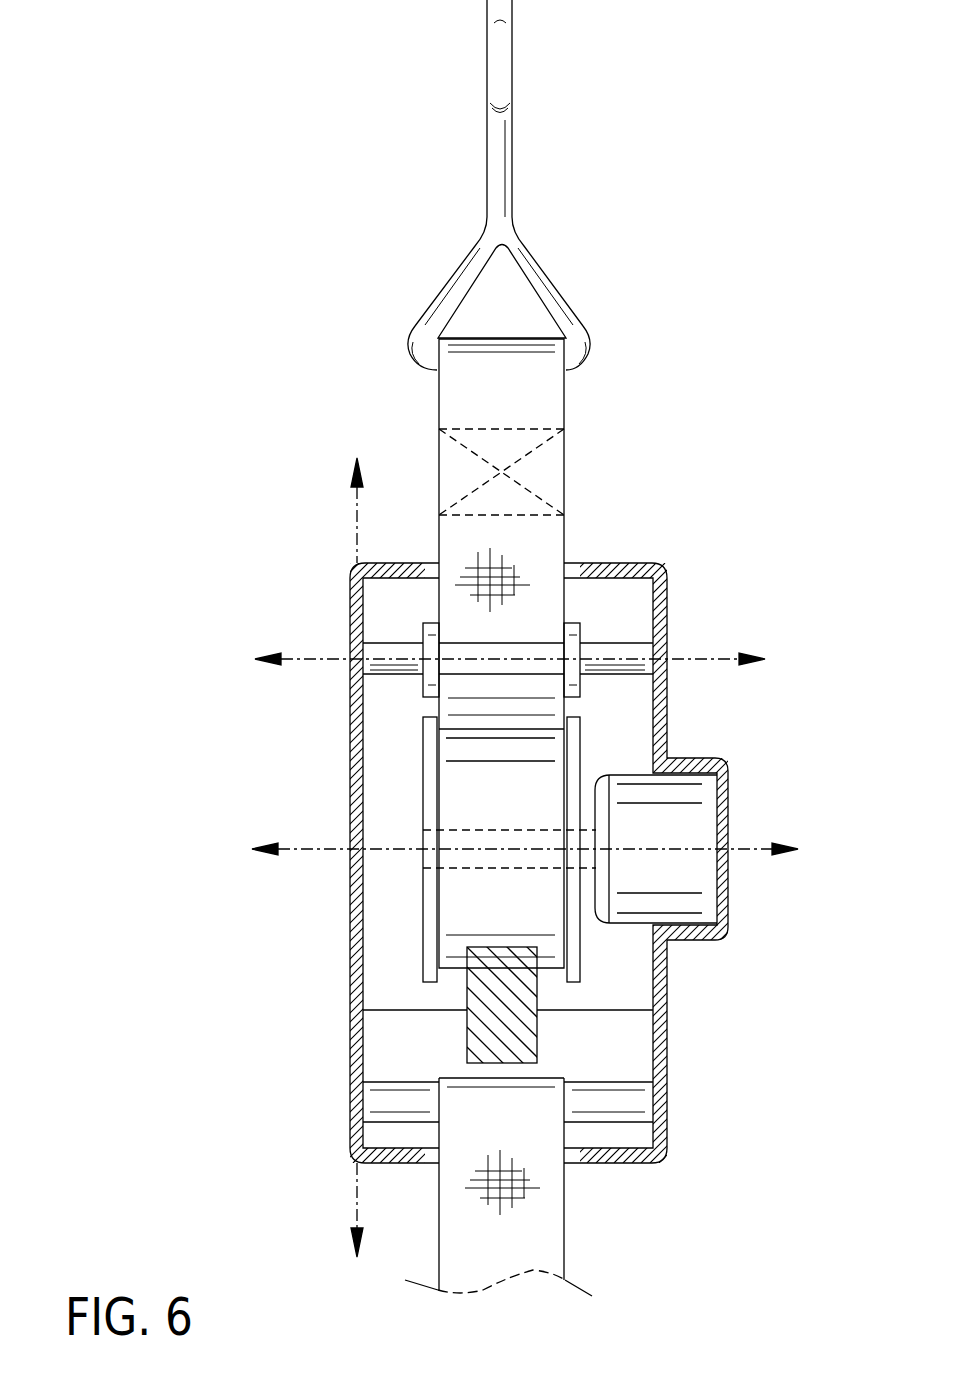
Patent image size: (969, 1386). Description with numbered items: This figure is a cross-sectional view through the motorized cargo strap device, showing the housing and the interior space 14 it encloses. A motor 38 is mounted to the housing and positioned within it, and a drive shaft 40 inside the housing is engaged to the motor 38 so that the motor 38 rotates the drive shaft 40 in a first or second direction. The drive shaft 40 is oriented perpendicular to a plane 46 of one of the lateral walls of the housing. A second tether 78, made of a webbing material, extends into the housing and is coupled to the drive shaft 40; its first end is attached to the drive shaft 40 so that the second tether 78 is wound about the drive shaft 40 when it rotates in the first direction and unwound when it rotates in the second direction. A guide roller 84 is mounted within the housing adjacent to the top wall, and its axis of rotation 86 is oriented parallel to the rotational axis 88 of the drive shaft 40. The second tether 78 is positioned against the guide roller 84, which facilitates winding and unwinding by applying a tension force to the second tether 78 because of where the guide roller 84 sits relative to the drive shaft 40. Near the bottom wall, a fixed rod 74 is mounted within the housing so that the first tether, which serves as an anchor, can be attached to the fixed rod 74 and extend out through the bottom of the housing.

The interior space 14 is at (381, 1050).
The motor 38 is at (658, 875).
The drive shaft 40 is at (428, 860).
The plane 46 is at (355, 510).
The fixed rod 74 is at (605, 1105).
The second tether 78 is at (661, 320).
The guide roller 84 is at (615, 653).
The axis of rotation 86 is at (731, 661).
The rotational axis 88 is at (315, 852).